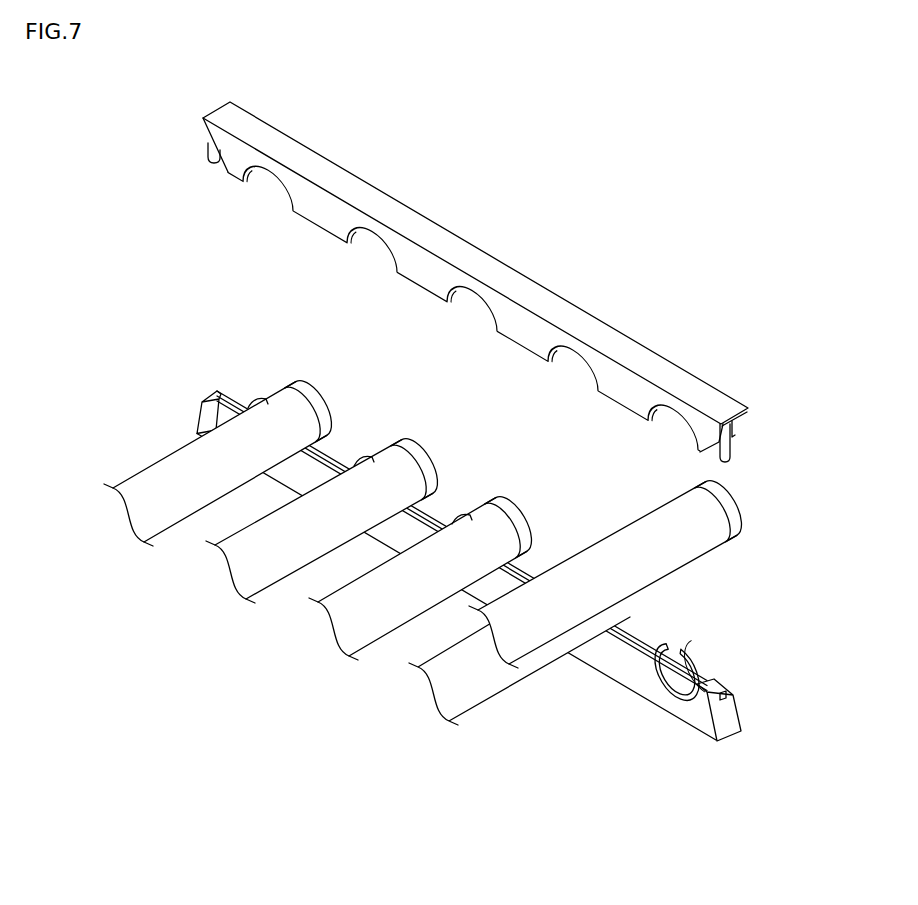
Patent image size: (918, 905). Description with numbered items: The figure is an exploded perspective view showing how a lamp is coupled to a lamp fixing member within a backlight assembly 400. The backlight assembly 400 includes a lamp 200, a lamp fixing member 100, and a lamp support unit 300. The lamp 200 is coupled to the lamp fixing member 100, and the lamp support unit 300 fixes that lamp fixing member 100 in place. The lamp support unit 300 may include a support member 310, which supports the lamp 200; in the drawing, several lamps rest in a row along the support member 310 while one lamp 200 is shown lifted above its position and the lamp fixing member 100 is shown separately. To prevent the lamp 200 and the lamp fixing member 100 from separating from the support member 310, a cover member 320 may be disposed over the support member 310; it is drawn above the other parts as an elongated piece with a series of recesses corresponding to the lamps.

The lamp fixing member 100 is at (684, 630).
The lamp 200 is at (609, 514).
The lamp support unit 300 is at (513, 566).
The support member 310 is at (743, 682).
The cover member 320 is at (744, 460).
The backlight assembly 400 is at (497, 303).